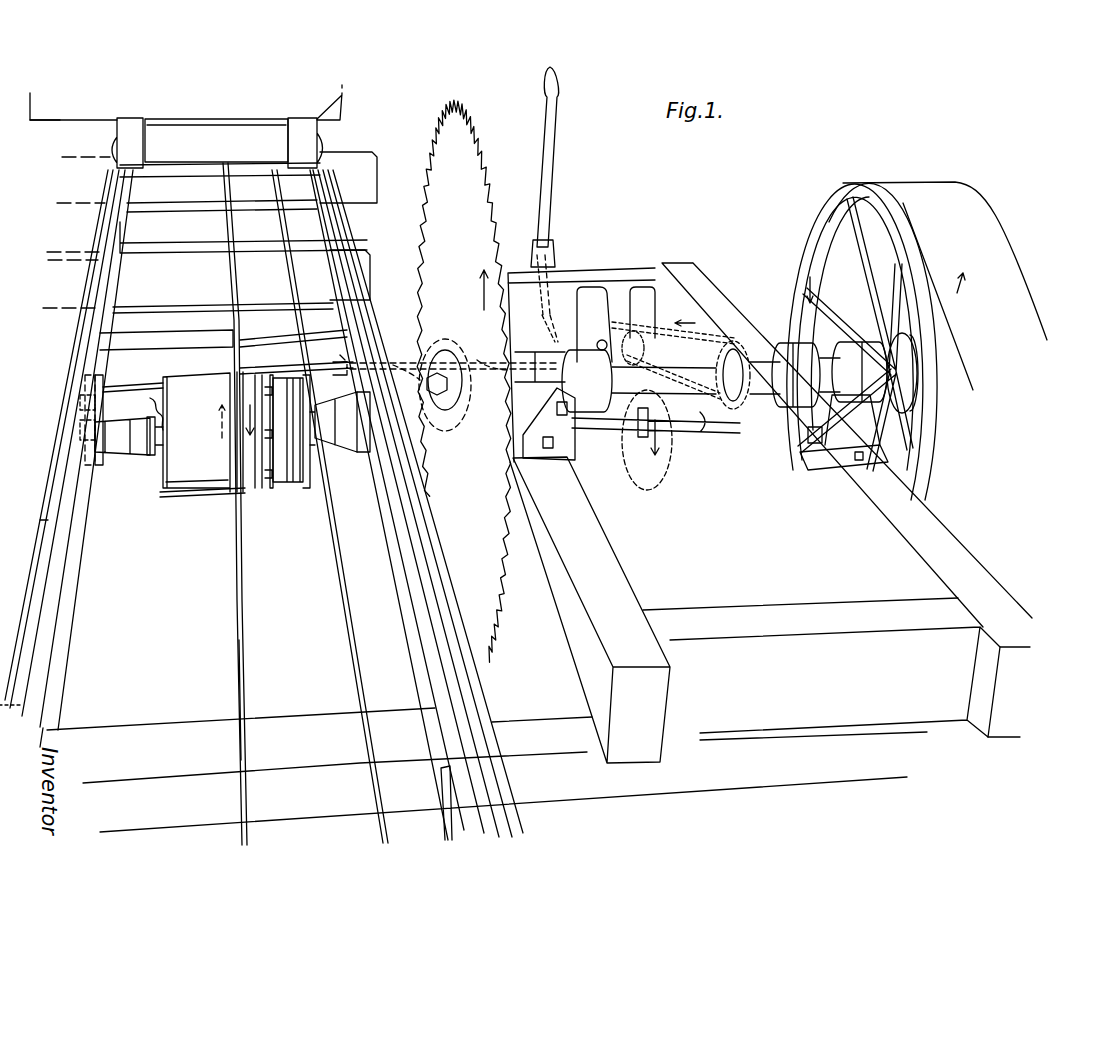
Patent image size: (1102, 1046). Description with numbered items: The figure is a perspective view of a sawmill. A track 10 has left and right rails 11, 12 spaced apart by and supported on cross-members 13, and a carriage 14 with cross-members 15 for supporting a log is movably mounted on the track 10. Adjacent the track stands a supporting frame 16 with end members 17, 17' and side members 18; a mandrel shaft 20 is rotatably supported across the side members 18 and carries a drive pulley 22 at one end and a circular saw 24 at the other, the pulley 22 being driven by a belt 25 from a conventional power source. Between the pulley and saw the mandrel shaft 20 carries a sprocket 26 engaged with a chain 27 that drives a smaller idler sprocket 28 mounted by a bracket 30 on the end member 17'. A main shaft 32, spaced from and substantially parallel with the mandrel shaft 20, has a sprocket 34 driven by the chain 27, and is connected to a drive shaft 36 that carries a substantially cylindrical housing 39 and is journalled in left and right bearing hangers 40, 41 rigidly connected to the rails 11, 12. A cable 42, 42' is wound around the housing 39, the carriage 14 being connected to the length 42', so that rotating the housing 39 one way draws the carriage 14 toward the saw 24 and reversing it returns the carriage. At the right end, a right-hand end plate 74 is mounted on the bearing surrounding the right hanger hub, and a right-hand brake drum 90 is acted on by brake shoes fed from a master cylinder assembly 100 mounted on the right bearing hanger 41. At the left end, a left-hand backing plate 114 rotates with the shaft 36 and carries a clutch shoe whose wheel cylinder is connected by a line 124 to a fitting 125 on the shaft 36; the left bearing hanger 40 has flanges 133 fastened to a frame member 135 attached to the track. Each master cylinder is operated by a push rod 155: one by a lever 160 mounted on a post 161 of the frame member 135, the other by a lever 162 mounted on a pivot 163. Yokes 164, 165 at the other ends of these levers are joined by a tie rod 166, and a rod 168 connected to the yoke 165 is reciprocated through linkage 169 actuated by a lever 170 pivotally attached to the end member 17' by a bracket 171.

The track 10 is at (31, 510).
The left rail 11 is at (45, 525).
The right rail 12 is at (420, 540).
The cross-members 13 is at (128, 268).
The carriage 14 is at (214, 142).
The cross-members 15 is at (53, 113).
The supporting frame 16 is at (703, 259).
The end member 17 is at (821, 667).
The end member 17' is at (581, 348).
The side members 18 is at (708, 293).
The mandrel shaft 20 is at (753, 350).
The drive pulley 22 is at (820, 232).
The circular saw 24 is at (464, 382).
The belt 25 is at (945, 286).
The sprocket 26 is at (740, 340).
The chain 27 is at (740, 340).
The idler sprocket 28 is at (640, 322).
The bracket 30 is at (590, 295).
The main shaft 32 is at (727, 425).
The sprocket 34 is at (647, 454).
The drive shaft 36 is at (160, 455).
The housing 39 is at (205, 503).
The left bearing hanger 40 is at (130, 458).
The right bearing hanger 41 is at (344, 460).
The cable 42 is at (214, 504).
The cable length 42' is at (262, 676).
The right-hand end plate 74 is at (271, 496).
The right-hand brake drum 90 is at (288, 490).
The master cylinder assembly 100 is at (335, 362).
The left-hand backing plate 114 is at (155, 498).
The line 124 is at (160, 385).
The fitting 125 is at (160, 427).
The flanges 133 is at (360, 482).
The frame member 135 is at (82, 537).
The push rod 155 is at (95, 442).
The lever 160 is at (85, 402).
The post 161 is at (85, 425).
The lever 162 is at (393, 365).
The pivot 163 is at (427, 410).
The yoke 164 is at (90, 373).
The yoke 165 is at (340, 355).
The tie rod 166 is at (135, 387).
The rod 168 is at (477, 360).
The linkage 169 is at (534, 329).
The lever 170 is at (541, 165).
The bracket 171 is at (530, 245).